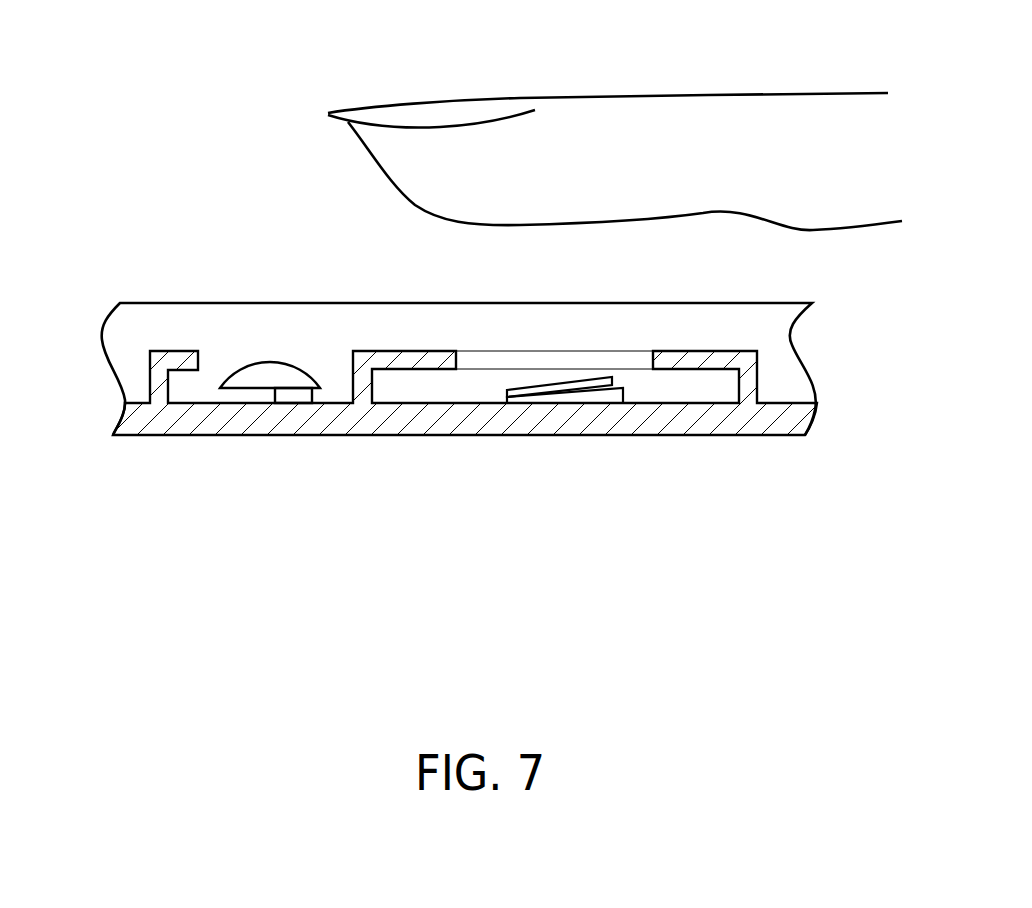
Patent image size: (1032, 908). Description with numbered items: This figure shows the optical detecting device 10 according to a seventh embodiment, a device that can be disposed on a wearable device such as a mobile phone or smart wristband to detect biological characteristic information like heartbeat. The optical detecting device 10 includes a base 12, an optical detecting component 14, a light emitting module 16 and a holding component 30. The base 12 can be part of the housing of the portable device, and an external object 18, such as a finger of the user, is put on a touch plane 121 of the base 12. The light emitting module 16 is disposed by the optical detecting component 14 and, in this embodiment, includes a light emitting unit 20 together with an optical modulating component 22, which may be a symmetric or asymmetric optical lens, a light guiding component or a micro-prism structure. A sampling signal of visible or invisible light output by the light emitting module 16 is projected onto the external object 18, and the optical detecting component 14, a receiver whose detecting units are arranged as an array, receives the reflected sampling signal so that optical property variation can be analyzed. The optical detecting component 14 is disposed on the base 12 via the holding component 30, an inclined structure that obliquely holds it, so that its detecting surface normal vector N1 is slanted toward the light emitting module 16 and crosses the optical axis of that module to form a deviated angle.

The optical detecting device 10 is at (137, 268).
The base 12 is at (705, 418).
The touch plane 121 is at (502, 345).
The optical detecting component 14 is at (547, 393).
The light emitting module 16 is at (264, 479).
The external object 18 is at (791, 106).
The light emitting unit 20 is at (292, 392).
The optical modulating component 22 is at (248, 380).
The holding component 30 is at (568, 400).
The detecting surface normal vector N1 is at (553, 383).